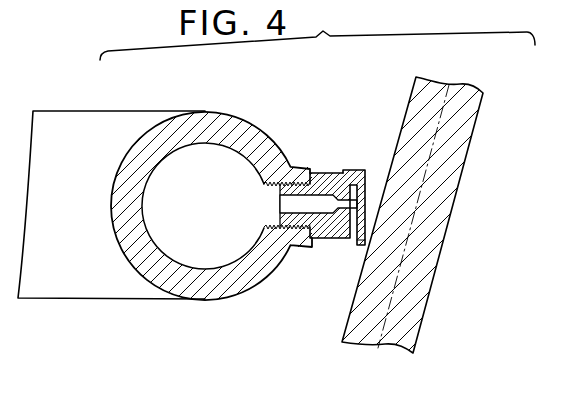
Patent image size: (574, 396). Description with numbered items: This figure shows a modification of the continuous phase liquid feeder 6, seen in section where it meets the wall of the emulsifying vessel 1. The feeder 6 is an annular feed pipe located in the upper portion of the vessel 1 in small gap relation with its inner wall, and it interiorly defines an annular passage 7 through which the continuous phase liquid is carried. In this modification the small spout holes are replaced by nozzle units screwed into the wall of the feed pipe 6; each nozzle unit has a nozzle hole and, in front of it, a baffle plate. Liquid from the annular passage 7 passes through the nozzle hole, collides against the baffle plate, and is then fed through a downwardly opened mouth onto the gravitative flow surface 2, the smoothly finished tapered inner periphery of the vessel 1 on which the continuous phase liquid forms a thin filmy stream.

The emulsifying vessel 1 is at (437, 162).
The gravitative flow surface 2 is at (360, 272).
The continuous phase liquid feeder 6 is at (68, 123).
The annular passage 7 is at (226, 147).